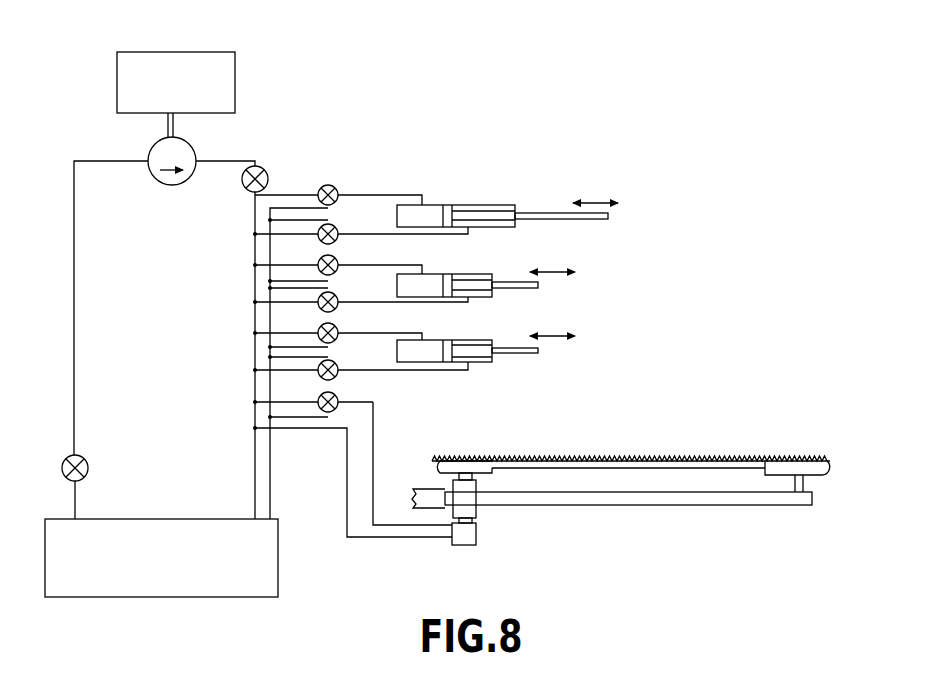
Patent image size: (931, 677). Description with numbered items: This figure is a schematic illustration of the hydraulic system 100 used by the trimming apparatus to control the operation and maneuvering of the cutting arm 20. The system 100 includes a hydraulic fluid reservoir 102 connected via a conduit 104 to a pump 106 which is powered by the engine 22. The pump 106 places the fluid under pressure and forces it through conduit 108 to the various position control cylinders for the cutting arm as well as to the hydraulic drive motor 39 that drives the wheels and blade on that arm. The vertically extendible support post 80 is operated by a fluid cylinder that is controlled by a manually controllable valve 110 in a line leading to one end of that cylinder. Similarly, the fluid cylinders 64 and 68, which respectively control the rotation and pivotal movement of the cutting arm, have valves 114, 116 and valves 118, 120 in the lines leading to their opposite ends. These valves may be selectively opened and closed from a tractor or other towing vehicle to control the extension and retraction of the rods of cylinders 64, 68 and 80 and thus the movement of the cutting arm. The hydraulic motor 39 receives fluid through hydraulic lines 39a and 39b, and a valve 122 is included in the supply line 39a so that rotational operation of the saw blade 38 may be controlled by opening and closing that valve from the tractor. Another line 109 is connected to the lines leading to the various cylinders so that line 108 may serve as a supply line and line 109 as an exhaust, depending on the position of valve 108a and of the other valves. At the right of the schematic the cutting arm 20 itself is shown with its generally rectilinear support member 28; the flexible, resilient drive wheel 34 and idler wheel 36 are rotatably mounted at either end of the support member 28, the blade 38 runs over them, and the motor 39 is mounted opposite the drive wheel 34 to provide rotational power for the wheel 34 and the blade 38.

The cutting arm 20 is at (621, 473).
The engine 22 is at (172, 60).
The support member 28 is at (568, 500).
The drive wheel 34 is at (468, 457).
The idler wheel 36 is at (778, 457).
The saw blade 38 is at (572, 457).
The hydraulic motor 39 is at (470, 537).
The hydraulic line 39a is at (373, 422).
The hydraulic line 39b is at (347, 488).
The fluid cylinder 64 is at (510, 280).
The fluid cylinder 68 is at (503, 347).
The vertically extendible support post 80 is at (537, 213).
The hydraulic system 100 is at (68, 140).
The hydraulic fluid reservoir 102 is at (138, 518).
The conduit 104 is at (75, 290).
The pump 106 is at (173, 186).
The conduit 108 is at (237, 160).
The valve 108a is at (268, 170).
The line 109 is at (270, 252).
The manually controllable valve 110 is at (336, 188).
The valve 114 is at (336, 227).
The valve 116 is at (336, 295).
The valve 118 is at (336, 326).
The valve 120 is at (336, 363).
The valve 122 is at (336, 395).